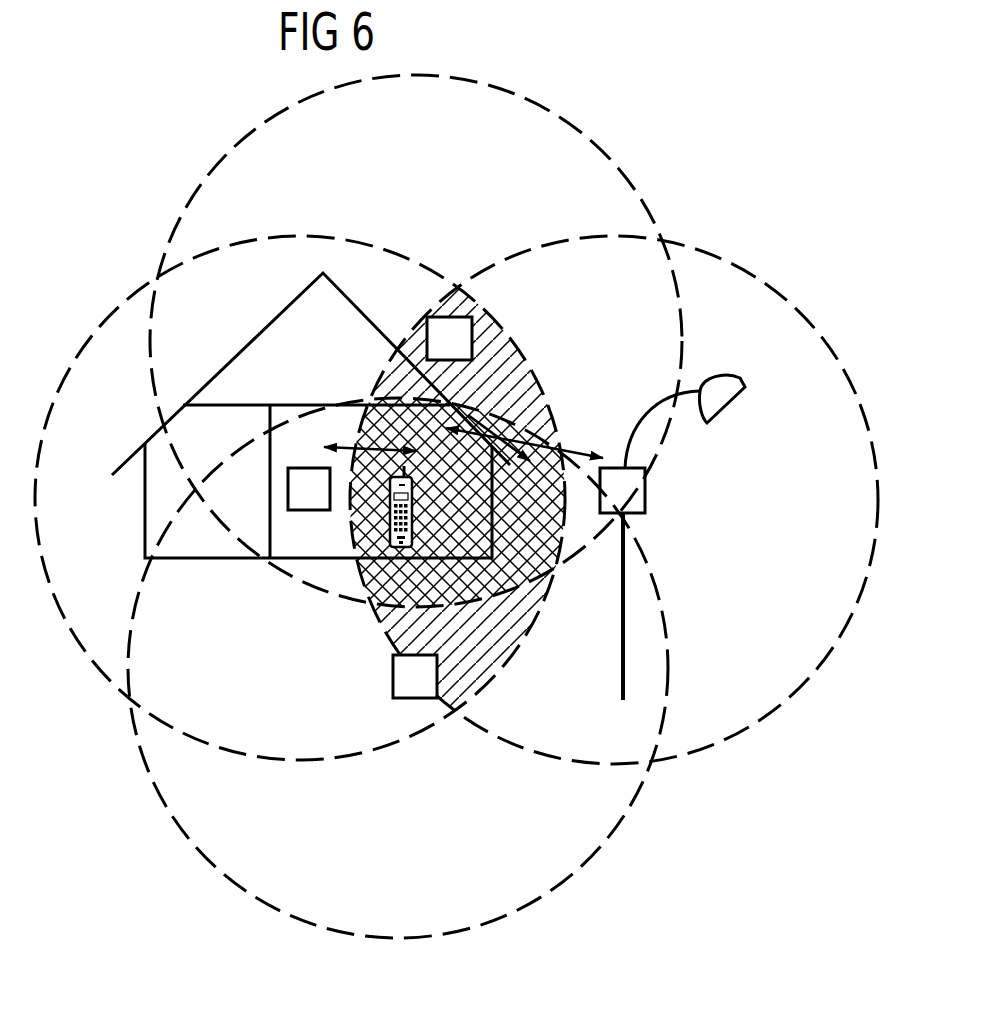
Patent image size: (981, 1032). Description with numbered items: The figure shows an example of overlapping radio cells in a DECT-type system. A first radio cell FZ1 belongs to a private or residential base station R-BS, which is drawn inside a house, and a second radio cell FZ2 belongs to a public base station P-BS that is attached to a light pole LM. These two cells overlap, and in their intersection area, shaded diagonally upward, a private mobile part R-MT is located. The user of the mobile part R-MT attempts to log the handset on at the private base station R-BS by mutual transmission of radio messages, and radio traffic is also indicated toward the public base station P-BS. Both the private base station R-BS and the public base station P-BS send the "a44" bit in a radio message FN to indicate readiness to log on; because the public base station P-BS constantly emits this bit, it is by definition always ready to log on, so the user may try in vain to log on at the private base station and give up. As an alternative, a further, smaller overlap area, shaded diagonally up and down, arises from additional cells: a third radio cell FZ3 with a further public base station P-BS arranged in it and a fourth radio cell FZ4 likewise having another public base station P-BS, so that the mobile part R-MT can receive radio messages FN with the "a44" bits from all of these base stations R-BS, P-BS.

The first radio cell FZ1 is at (268, 691).
The second radio cell FZ2 is at (829, 544).
The third radio cell FZ3 is at (432, 851).
The fourth radio cell FZ4 is at (448, 148).
The public base station P-BS is at (453, 317).
The private base station R-BS is at (308, 510).
The private mobile part R-MT is at (400, 552).
The light pole LM is at (624, 627).
The radio message FN is at (350, 448).